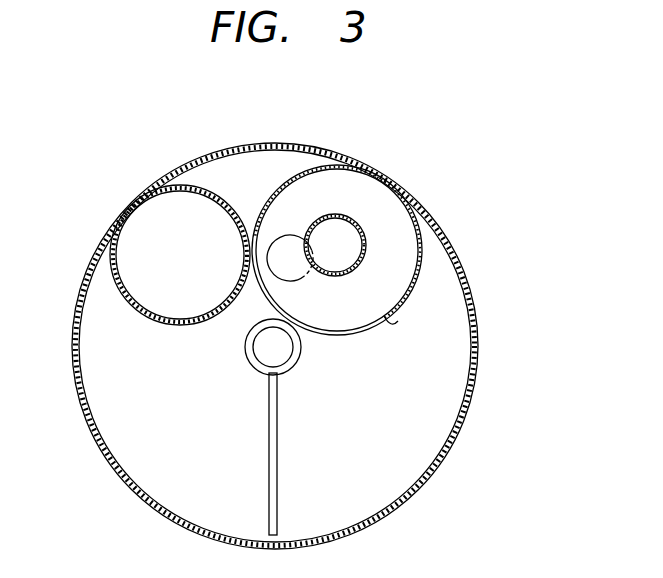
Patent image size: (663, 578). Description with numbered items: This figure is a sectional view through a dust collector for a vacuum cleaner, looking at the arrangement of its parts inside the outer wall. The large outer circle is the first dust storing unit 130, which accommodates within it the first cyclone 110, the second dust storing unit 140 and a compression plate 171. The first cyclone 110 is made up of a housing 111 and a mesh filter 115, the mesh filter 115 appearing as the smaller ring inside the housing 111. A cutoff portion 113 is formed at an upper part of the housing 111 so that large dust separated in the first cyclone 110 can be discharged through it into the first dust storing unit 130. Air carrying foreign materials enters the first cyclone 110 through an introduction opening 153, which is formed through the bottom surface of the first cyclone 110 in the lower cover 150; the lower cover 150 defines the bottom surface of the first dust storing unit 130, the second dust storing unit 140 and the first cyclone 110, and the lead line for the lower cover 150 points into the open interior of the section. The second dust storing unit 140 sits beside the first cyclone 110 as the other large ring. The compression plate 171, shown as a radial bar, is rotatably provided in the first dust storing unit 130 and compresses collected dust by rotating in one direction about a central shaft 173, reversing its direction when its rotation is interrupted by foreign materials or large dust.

The first cyclone 110 is at (417, 209).
The housing 111 is at (422, 250).
The cutoff portion 113 is at (392, 325).
The mesh filter 115 is at (359, 225).
The first dust storing unit 130 is at (477, 320).
The second dust storing unit 140 is at (211, 182).
The lower cover 150 is at (367, 423).
The introduction opening 153 is at (295, 235).
The compression plate 171 is at (268, 461).
The central shaft 173 is at (245, 347).